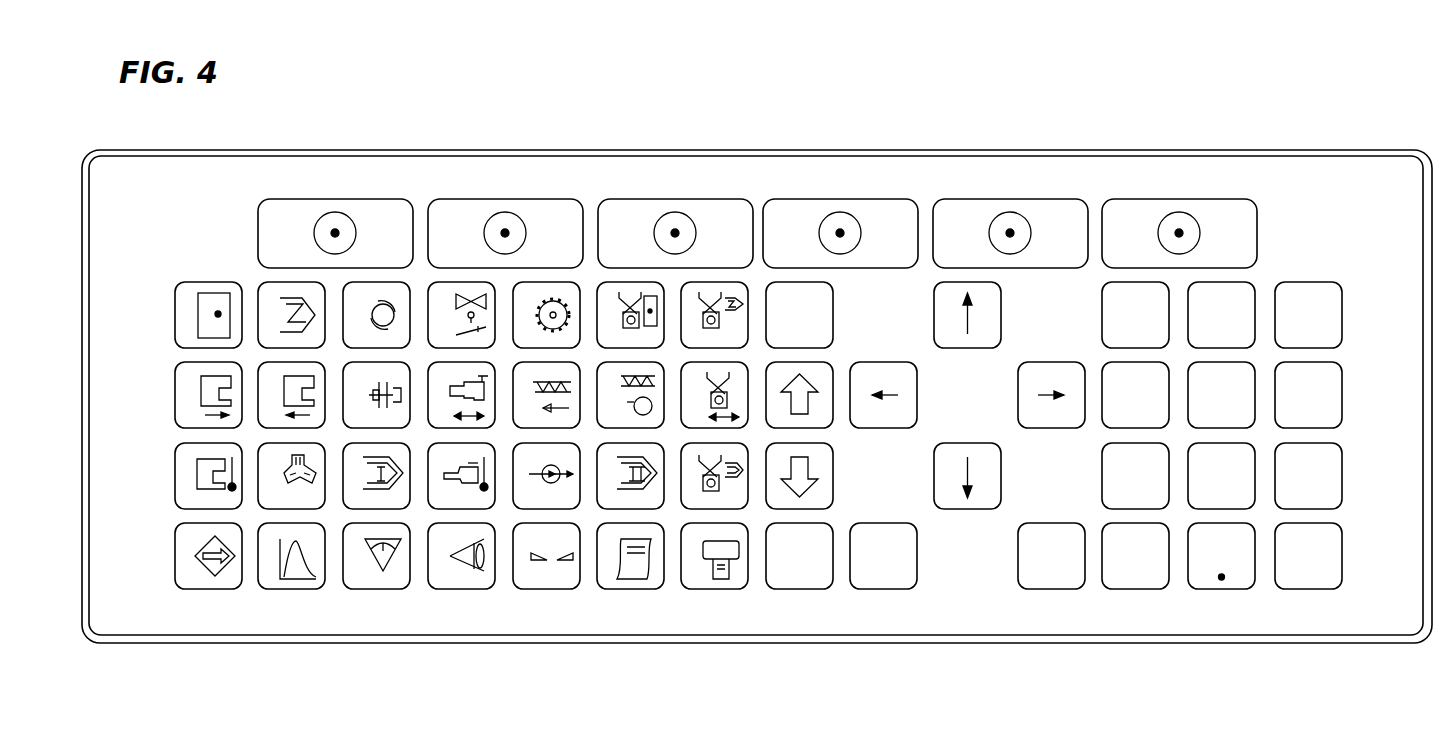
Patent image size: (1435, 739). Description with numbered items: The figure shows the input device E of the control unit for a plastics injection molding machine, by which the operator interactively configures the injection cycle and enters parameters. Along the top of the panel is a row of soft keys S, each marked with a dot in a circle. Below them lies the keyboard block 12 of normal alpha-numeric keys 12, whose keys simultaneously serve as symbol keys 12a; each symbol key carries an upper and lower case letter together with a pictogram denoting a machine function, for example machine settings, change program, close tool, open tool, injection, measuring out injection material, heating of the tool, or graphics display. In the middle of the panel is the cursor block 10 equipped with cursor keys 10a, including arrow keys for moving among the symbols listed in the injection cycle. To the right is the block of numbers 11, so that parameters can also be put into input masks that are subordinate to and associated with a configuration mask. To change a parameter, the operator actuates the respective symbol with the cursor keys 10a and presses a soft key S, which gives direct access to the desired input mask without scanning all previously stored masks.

The input device E is at (835, 147).
The soft keys S is at (717, 217).
The cursor block 10 is at (948, 406).
The cursor keys 10a is at (985, 312).
The block of numbers 11 is at (1245, 292).
The alpha-numeric keys 12 is at (505, 425).
The symbol keys 12a is at (318, 550).